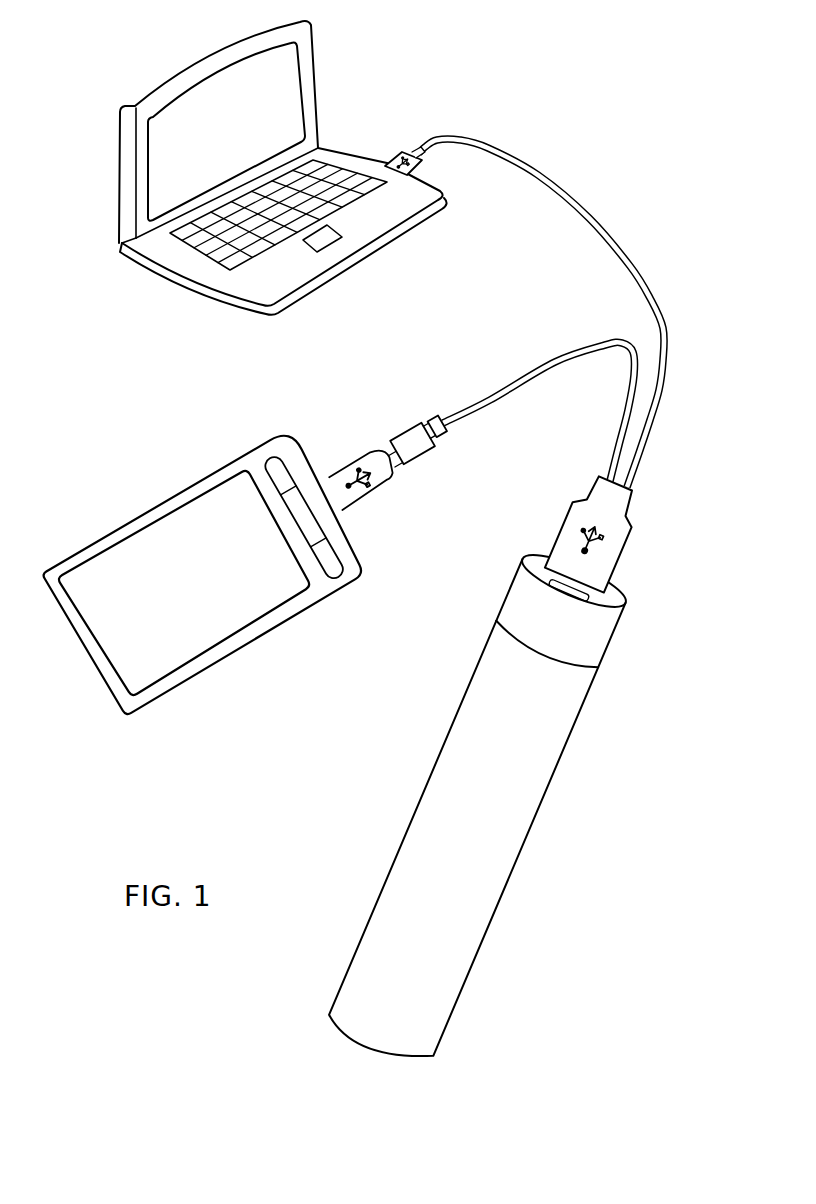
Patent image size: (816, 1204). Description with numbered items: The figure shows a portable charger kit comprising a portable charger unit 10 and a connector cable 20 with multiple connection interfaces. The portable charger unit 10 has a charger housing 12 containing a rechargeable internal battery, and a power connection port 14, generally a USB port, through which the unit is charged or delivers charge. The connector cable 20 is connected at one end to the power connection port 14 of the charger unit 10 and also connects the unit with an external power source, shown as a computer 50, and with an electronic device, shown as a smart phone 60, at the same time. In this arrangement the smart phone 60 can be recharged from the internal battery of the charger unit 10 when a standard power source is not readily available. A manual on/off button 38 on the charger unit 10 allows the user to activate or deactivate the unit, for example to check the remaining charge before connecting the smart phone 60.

The portable charger unit 10 is at (477, 785).
The charger housing 12 is at (392, 927).
The power connection port 14 is at (568, 590).
The connector cable 20 is at (655, 298).
The manual on/off button 38 is at (585, 588).
The computer 50 is at (285, 105).
The smart phone 60 is at (208, 633).